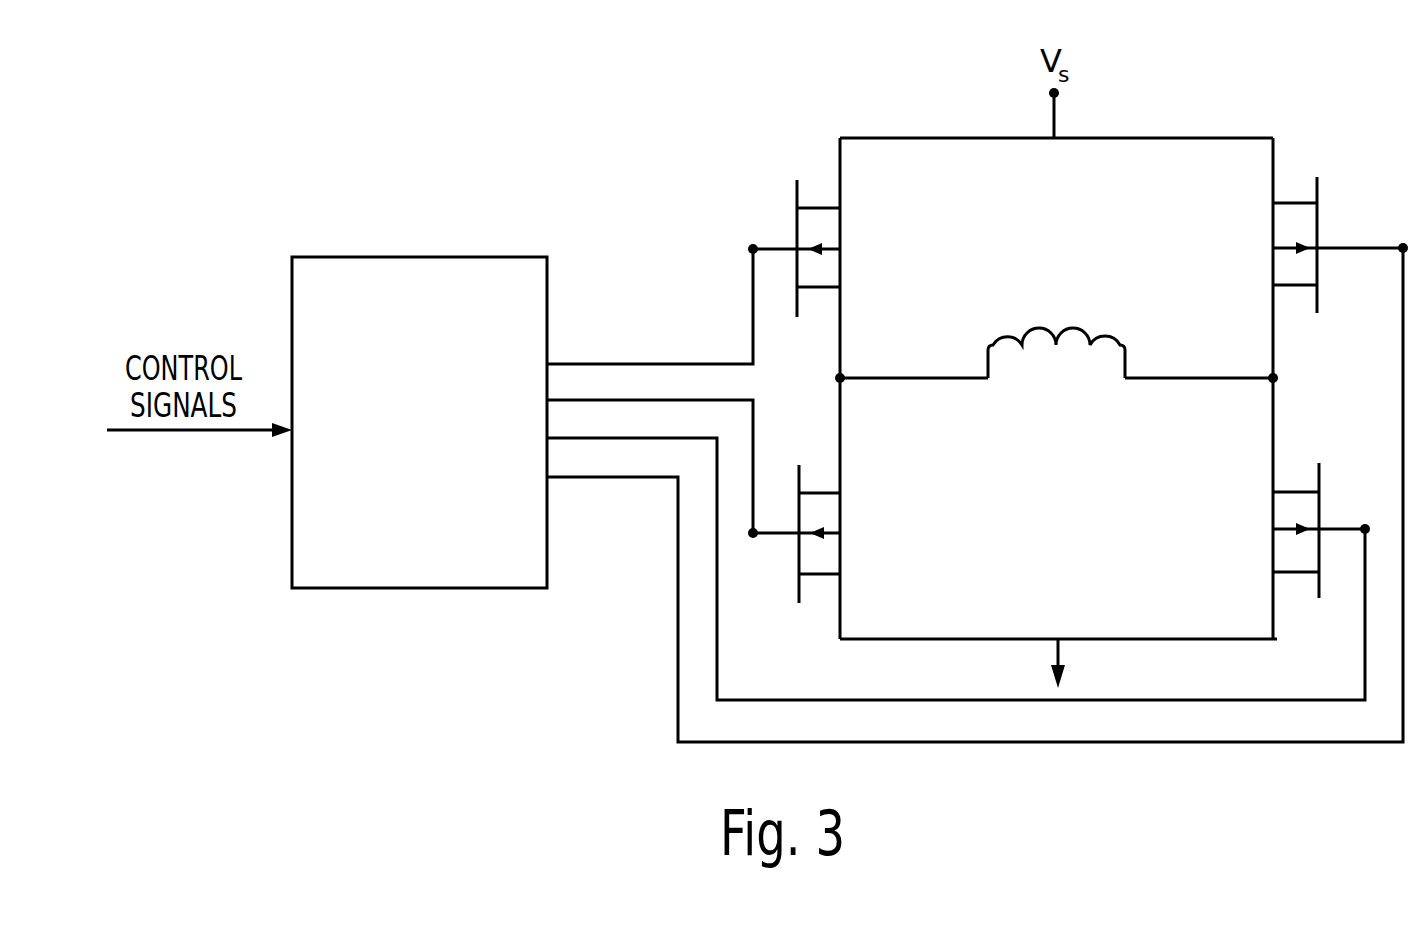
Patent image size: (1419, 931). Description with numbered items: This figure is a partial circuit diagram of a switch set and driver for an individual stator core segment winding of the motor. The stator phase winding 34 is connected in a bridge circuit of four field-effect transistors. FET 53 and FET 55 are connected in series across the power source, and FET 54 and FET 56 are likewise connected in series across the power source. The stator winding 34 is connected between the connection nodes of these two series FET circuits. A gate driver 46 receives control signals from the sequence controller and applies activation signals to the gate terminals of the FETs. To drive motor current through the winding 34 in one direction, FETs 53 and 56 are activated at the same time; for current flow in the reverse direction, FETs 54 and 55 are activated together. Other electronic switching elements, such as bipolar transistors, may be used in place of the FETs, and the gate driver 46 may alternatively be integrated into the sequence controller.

The stator phase winding 34 is at (1040, 330).
The gate driver 46 is at (472, 588).
The FET 53 is at (795, 215).
The FET 54 is at (1318, 213).
The FET 55 is at (797, 587).
The FET 56 is at (1322, 585).